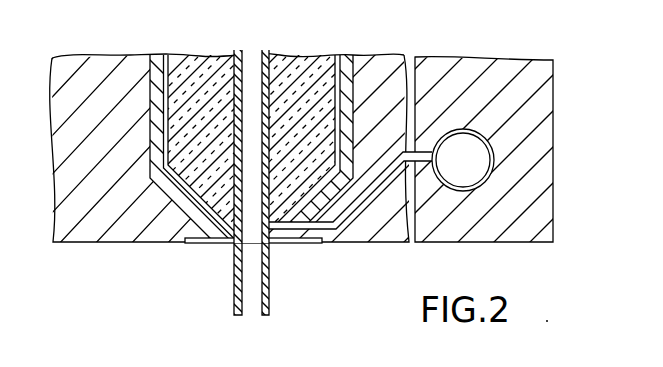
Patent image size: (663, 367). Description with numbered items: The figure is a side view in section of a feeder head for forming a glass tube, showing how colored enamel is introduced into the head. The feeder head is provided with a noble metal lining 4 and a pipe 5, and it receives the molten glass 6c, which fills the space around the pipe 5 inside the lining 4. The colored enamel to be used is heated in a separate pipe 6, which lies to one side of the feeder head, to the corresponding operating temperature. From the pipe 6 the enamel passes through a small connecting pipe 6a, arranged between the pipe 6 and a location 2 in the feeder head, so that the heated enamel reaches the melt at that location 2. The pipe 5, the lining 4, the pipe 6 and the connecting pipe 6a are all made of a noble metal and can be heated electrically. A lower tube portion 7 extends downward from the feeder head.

The molten glass 6c is at (207, 36).
The pipe 5 is at (268, 66).
The noble metal lining 4 is at (342, 67).
The pipe 6 is at (479, 126).
The connecting pipe 6a is at (373, 192).
The location 2 is at (291, 244).
The outlet tube 7 is at (237, 282).